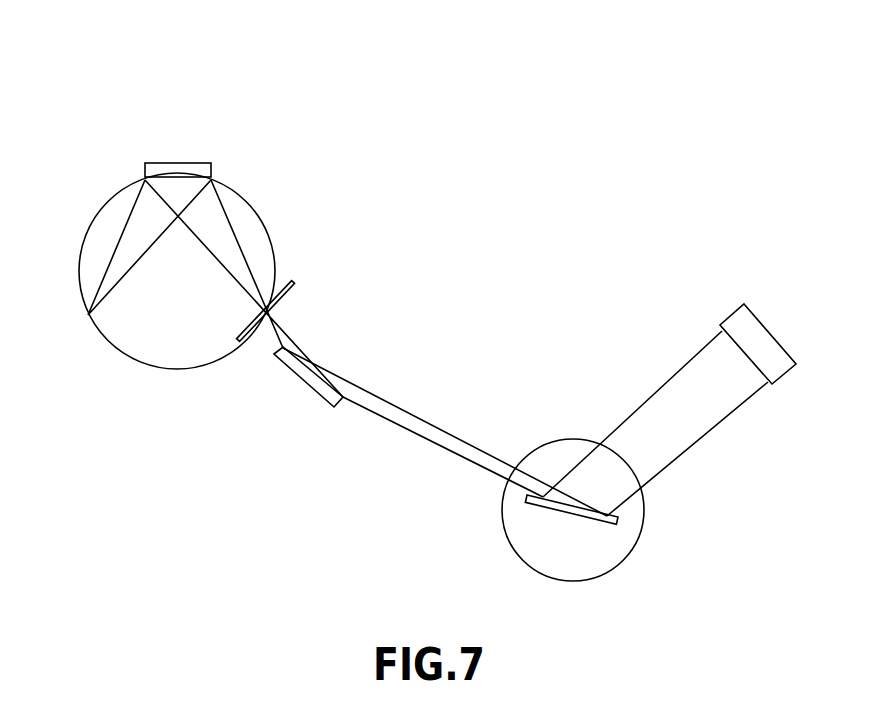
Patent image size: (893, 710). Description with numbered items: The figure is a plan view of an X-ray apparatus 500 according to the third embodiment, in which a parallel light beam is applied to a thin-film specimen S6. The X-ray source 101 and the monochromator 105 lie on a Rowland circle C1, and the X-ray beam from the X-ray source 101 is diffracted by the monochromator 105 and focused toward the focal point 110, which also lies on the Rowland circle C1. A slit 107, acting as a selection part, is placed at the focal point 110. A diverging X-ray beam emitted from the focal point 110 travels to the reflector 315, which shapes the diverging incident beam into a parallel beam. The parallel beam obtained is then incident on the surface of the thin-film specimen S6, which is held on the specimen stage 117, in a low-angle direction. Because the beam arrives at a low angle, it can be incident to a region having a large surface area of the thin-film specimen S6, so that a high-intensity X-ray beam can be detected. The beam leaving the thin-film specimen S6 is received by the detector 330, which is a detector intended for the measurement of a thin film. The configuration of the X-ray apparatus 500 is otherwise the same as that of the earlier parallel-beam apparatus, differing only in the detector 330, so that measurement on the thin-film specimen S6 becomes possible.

The X-ray apparatus 500 is at (435, 68).
The Rowland circle C1 is at (93, 222).
The monochromator 105 is at (173, 162).
The X-ray source 101 is at (88, 315).
The focal point 110 is at (272, 312).
The slit 107 is at (297, 288).
The reflector 315 is at (313, 391).
The specimen stage 117 is at (568, 438).
The thin-film specimen S6 is at (573, 513).
The detector 330 is at (783, 378).